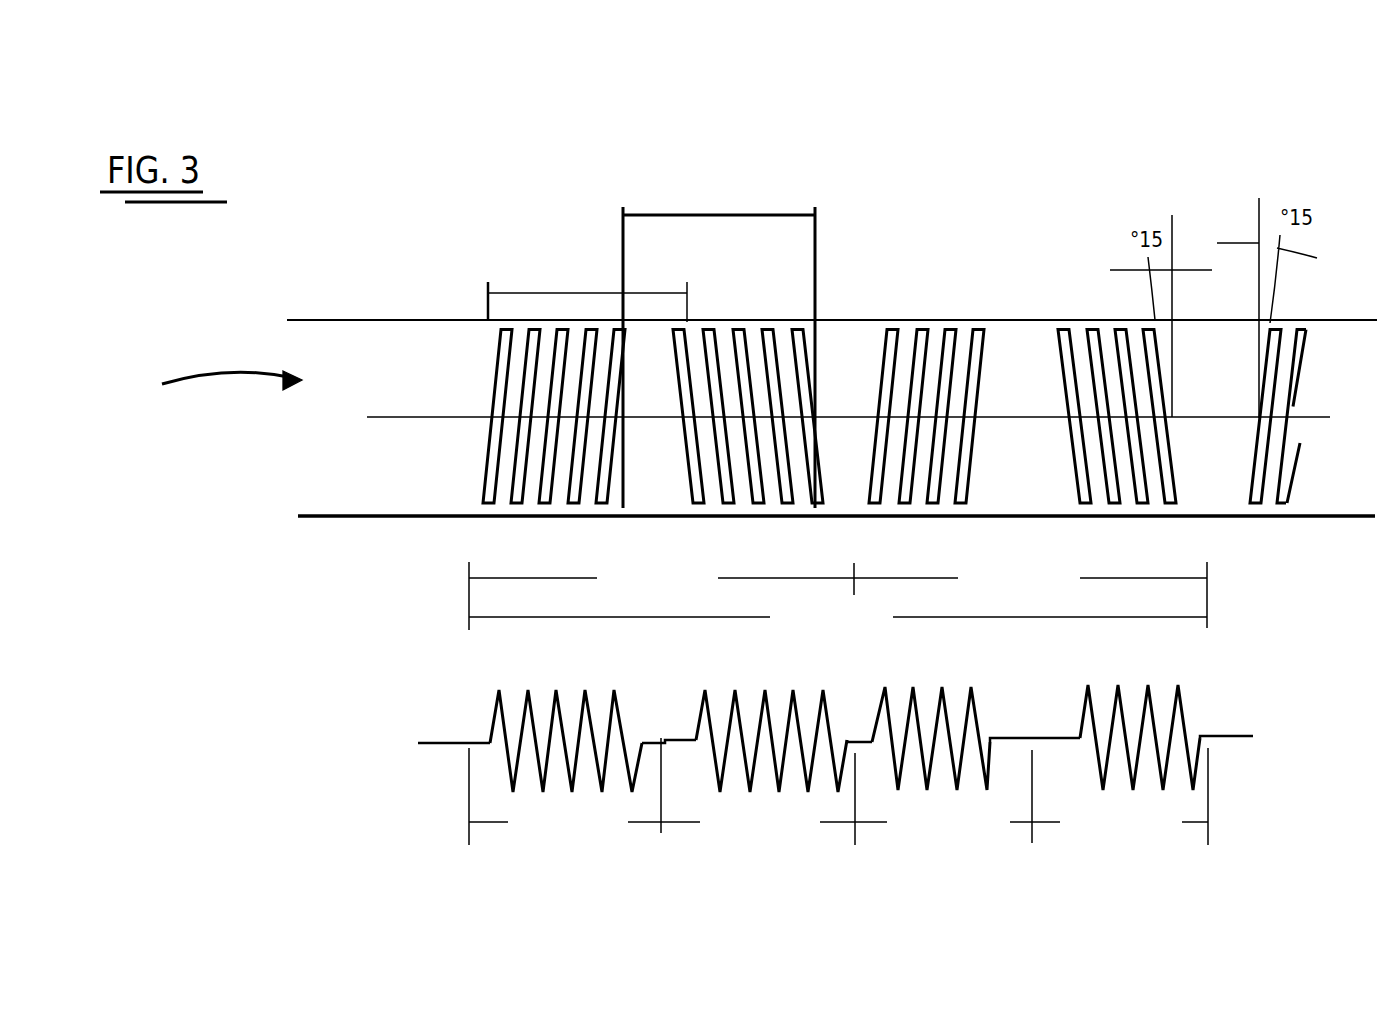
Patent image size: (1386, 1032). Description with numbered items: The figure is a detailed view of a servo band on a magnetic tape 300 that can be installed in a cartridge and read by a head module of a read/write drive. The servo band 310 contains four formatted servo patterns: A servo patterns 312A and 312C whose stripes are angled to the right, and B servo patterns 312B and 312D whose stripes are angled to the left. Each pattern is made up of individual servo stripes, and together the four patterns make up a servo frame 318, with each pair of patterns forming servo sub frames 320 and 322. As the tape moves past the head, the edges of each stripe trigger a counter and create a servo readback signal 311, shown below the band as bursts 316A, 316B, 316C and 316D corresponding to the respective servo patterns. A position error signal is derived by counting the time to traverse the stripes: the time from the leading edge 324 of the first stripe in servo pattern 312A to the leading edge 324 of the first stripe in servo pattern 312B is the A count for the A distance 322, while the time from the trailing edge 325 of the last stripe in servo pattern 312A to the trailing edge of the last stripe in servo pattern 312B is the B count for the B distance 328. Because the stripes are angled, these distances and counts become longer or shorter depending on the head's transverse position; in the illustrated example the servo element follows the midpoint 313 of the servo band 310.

The magnetic tape 300 is at (233, 286).
The servo band 310 is at (212, 411).
The servo readback signal 311 is at (297, 697).
The midpoint 313 is at (422, 416).
The A servo pattern 312A is at (554, 442).
The B servo pattern 312B is at (748, 442).
The A servo pattern 312C is at (926, 442).
The B servo pattern 312D is at (1117, 442).
The burst 316A is at (566, 723).
The burst 316B is at (771, 723).
The burst 316C is at (931, 722).
The burst 316D is at (1140, 722).
The servo frame 318 is at (838, 616).
The servo sub frame 320 is at (661, 596).
The servo sub frame / A distance 322 is at (568, 292).
The leading edge 324 is at (483, 440).
The trailing edge 325 is at (618, 440).
The B distance 328 is at (690, 215).